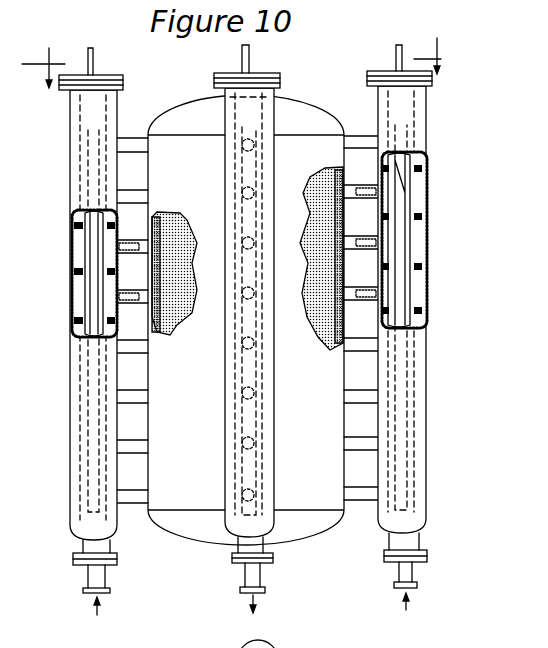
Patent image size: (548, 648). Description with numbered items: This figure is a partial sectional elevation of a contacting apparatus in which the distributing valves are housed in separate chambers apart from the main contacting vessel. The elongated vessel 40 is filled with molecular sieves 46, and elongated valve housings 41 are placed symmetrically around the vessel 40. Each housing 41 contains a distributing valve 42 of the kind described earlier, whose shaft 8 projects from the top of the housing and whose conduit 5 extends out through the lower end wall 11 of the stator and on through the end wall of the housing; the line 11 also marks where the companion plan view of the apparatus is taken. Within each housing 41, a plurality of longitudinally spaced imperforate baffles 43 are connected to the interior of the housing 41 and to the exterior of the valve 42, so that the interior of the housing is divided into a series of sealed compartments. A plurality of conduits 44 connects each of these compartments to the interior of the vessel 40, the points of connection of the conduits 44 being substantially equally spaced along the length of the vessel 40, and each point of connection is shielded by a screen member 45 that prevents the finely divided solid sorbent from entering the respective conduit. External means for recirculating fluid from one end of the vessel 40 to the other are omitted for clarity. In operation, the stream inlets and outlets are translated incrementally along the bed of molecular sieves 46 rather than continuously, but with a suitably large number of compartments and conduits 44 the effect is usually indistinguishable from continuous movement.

The conduit 5 is at (103, 583).
The shaft 8 is at (93, 63).
The lower end wall 11 is at (231, 63).
The elongated vessel 40 is at (207, 110).
The elongated valve housing 41 is at (70, 183).
The distributing valve 42 is at (82, 297).
The imperforate baffle 43 is at (72, 261).
The conduit 44 is at (143, 447).
The screen member 45 is at (170, 314).
The molecular sieves 46 is at (175, 212).